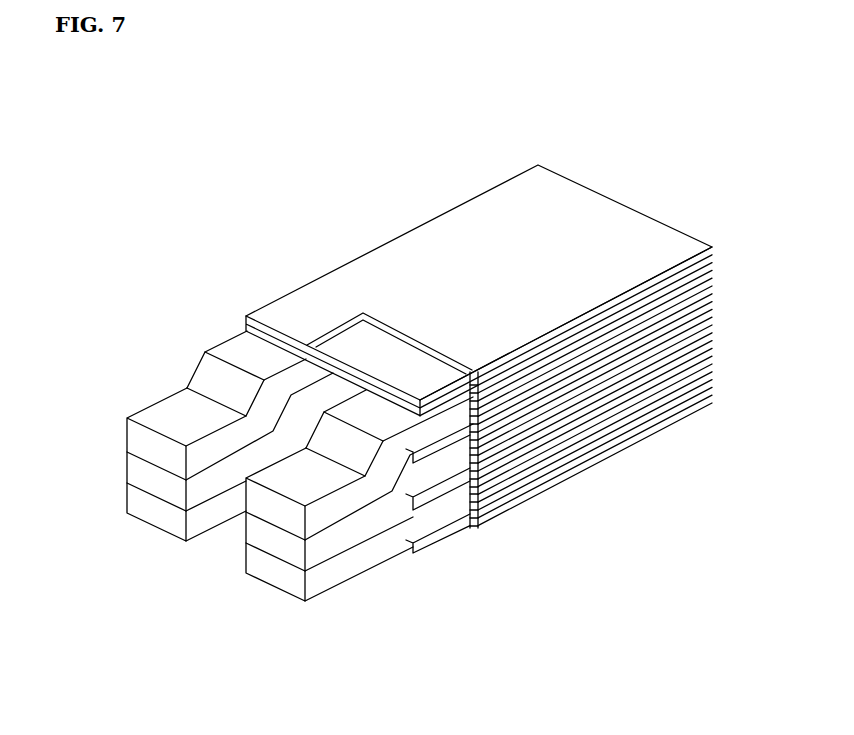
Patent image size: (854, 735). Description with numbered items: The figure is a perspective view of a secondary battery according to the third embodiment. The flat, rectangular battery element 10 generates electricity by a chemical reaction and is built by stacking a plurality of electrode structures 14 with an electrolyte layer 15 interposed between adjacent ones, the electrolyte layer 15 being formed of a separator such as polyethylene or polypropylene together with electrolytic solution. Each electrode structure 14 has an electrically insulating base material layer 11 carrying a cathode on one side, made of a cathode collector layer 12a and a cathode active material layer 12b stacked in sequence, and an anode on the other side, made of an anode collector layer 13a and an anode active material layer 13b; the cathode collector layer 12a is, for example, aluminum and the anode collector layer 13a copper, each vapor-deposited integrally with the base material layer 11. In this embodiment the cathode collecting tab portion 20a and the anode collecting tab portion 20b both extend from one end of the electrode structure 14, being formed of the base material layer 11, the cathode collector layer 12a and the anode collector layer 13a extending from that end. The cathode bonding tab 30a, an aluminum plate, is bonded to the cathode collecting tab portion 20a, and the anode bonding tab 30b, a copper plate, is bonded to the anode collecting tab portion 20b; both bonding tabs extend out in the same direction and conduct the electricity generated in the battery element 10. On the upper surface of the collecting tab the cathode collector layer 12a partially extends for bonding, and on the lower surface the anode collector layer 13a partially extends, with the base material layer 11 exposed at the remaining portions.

The battery element 10 is at (347, 251).
The base material layer 11 is at (560, 425).
The cathode collector layer 12a is at (522, 438).
The cathode active material layer 12b is at (487, 453).
The anode collector layer 13a is at (593, 415).
The anode active material layer 13b is at (634, 398).
The electrode structure 14 is at (608, 413).
The electrolyte layer 15 is at (608, 433).
The cathode collecting tab portion 20a is at (238, 308).
The anode collecting tab portion 20b is at (443, 414).
The cathode bonding tab 30a is at (165, 410).
The anode bonding tab 30b is at (353, 564).